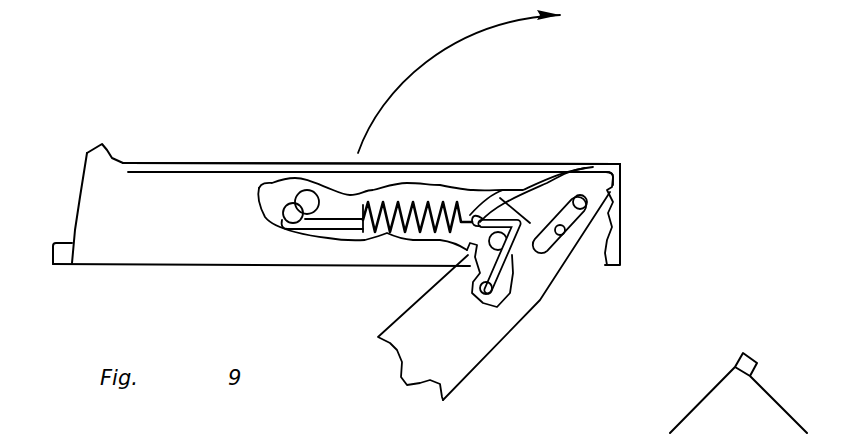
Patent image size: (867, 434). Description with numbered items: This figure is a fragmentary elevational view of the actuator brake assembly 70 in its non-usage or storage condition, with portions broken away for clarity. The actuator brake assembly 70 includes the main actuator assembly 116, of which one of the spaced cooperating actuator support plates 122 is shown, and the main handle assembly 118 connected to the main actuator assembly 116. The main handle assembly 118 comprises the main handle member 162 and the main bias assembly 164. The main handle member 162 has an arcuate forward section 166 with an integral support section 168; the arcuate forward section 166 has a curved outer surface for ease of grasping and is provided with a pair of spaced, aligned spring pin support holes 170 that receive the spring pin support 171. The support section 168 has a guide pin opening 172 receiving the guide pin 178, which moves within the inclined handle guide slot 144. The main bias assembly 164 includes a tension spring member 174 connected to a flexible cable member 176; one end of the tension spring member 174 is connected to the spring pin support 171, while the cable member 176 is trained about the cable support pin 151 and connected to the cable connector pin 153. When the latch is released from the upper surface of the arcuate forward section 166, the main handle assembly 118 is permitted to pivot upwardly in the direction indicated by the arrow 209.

The actuator brake assembly 70 is at (173, 270).
The main handle member 162 is at (118, 270).
The arcuate forward section 166 is at (220, 183).
The spring pin support 171 is at (259, 188).
The inclined handle guide slot 144 is at (603, 265).
The cable support pin 151 is at (583, 167).
The support section 168 is at (590, 172).
The spring pin support holes 170 is at (310, 233).
The flexible cable member 176 is at (510, 257).
The main bias assembly 164 is at (396, 165).
The tension spring member 174 is at (396, 165).
The cable connector pin 153 is at (488, 296).
The guide pin opening 172 is at (585, 188).
The guide pin 178 is at (590, 212).
The main actuator assembly 116 is at (490, 353).
The actuator support plate 122 is at (457, 373).
The main handle assembly 118 is at (508, 175).
The arrow 209 is at (440, 60).